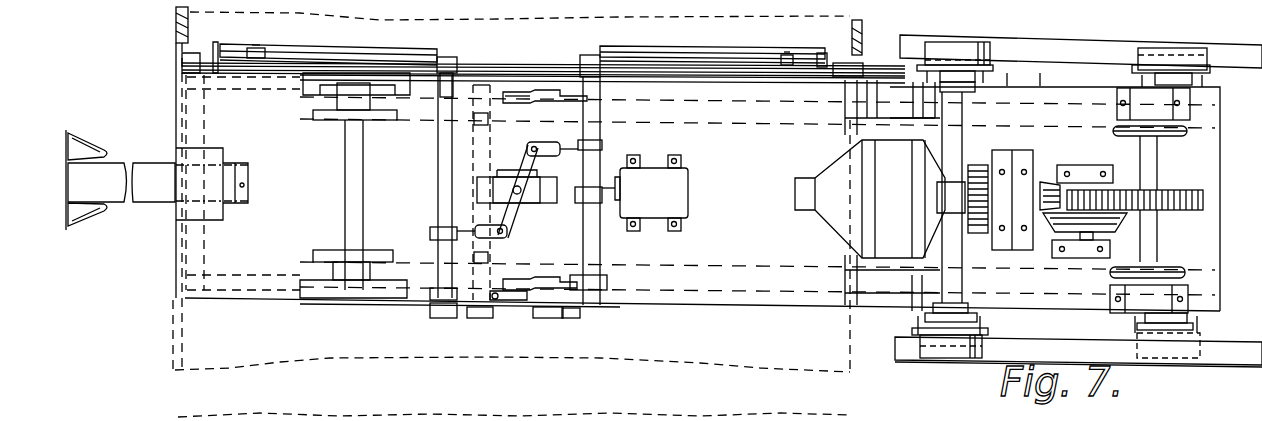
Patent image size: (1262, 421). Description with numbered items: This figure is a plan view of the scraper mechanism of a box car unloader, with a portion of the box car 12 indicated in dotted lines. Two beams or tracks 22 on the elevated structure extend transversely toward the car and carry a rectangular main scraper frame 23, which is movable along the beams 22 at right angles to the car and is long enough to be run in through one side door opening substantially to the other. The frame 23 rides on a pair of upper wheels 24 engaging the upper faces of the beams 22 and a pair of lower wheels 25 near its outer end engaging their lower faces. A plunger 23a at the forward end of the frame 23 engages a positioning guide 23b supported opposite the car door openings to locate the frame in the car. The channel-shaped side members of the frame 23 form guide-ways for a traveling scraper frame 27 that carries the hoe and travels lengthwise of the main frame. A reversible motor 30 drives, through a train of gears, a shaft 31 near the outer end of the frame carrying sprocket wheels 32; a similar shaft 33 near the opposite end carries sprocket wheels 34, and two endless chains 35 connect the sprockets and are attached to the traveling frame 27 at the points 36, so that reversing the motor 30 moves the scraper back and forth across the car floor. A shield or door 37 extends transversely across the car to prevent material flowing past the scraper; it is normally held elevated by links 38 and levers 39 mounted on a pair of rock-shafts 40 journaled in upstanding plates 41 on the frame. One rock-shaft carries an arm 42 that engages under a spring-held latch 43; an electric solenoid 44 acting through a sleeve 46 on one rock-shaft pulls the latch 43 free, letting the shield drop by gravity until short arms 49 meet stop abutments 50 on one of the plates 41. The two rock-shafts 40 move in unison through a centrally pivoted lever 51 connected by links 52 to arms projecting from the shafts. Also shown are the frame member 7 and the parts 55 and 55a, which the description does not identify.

The frame 7 is at (995, 197).
The box car 12 is at (862, 34).
The beams or tracks 22 is at (1240, 362).
The main scraper frame 23 is at (800, 312).
The plunger 23a is at (158, 184).
The positioning guide 23b is at (100, 222).
The upper wheels 24 is at (966, 50).
The lower wheels 25 is at (1195, 50).
The traveling scraper frame 27 is at (470, 147).
The reversible motor 30 is at (830, 203).
The motor driven shaft 31 is at (1160, 235).
The sprocket wheels 32 is at (1182, 134).
The shaft 33 is at (340, 196).
The sprocket wheels 34 is at (243, 183).
The endless chains 35 is at (750, 124).
The point of connection of chains 36 is at (488, 122).
The shield or door 37 is at (520, 58).
The links 38 is at (257, 46).
The levers 39 is at (340, 48).
The rock-shafts 40 is at (438, 190).
The upstanding plates 41 is at (504, 70).
The arm 42 is at (465, 306).
The latch 43 is at (515, 301).
The electric solenoid 44 is at (645, 193).
The sleeve 46 is at (602, 240).
The short arms 49 is at (570, 318).
The stop abutments 50 is at (483, 320).
The lever 51 is at (514, 221).
The links 52 is at (580, 150).
The pawl 55 is at (535, 92).
The catch 55a is at (584, 292).